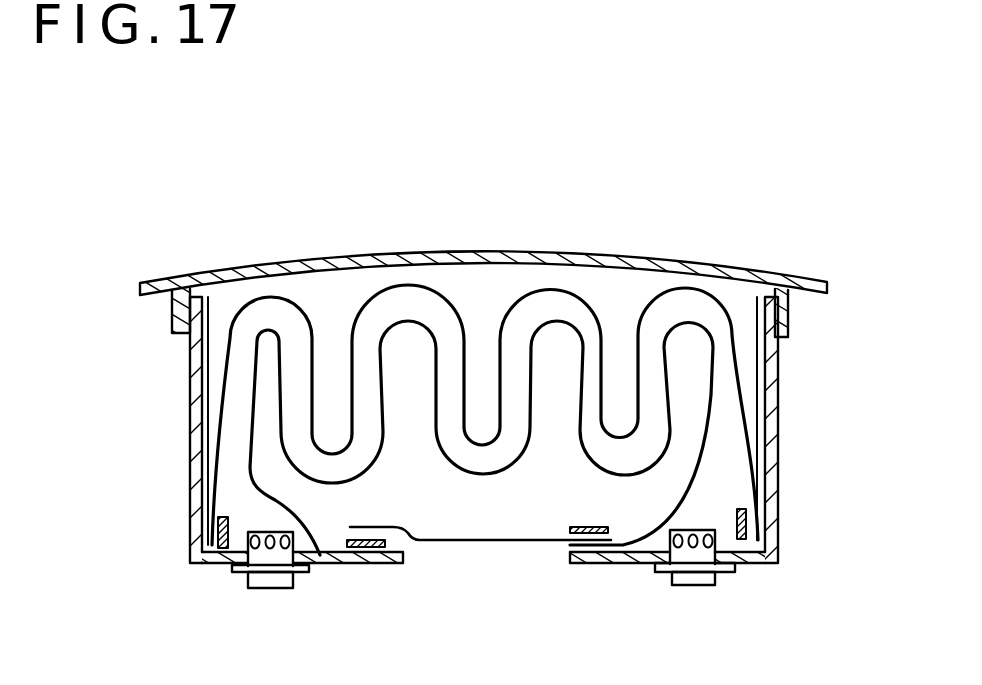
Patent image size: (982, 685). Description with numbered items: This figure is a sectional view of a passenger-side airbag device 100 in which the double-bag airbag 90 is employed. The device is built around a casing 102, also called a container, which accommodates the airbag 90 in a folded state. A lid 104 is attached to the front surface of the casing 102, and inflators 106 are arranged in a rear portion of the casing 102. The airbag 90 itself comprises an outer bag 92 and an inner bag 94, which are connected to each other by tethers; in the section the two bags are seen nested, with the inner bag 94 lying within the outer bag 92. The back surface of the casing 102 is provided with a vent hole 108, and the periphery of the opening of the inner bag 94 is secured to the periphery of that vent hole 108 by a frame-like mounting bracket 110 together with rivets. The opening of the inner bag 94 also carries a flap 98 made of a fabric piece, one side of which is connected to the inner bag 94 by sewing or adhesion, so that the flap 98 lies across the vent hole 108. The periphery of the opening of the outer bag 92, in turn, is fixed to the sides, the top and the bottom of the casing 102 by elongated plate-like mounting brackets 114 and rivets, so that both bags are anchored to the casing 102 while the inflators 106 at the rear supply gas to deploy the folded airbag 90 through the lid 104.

The airbag 90 is at (517, 291).
The outer bag 92 is at (740, 372).
The inner bag 94 is at (710, 428).
The flap 98 is at (490, 540).
The passenger-side airbag device 100 is at (696, 233).
The casing 102 is at (778, 487).
The lid 104 is at (372, 257).
The inflator 106 is at (270, 588).
The vent hole 108 is at (568, 556).
The mounting bracket 110 is at (587, 527).
The mounting bracket 114 is at (223, 550).